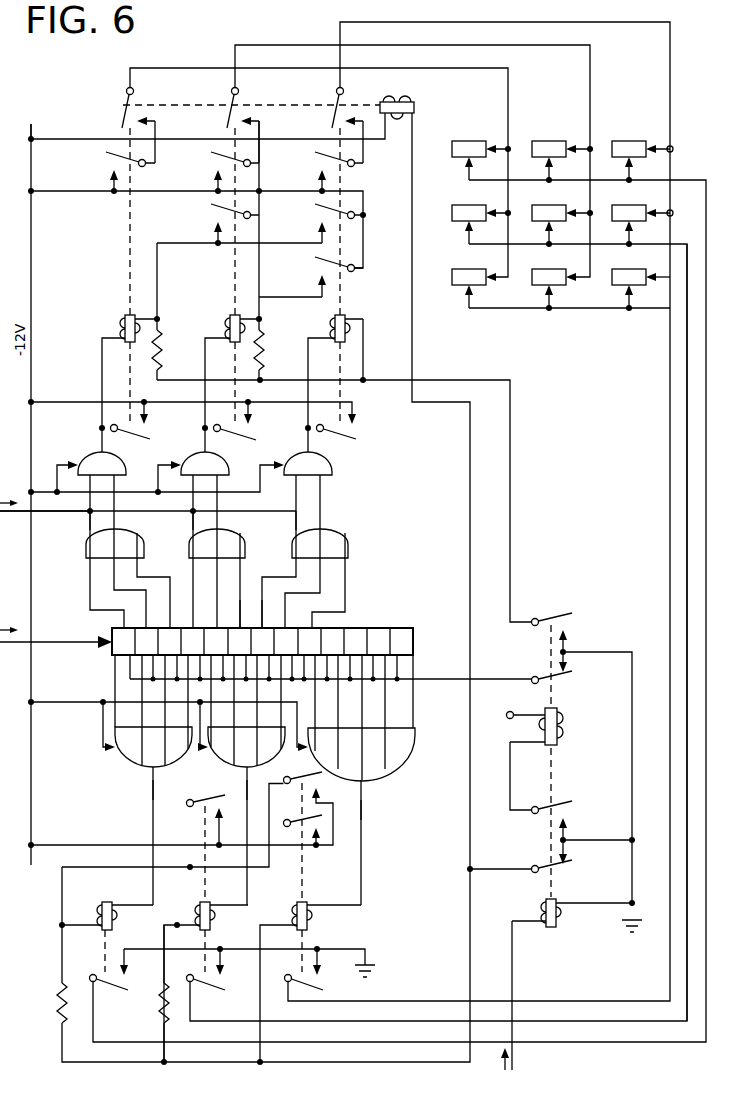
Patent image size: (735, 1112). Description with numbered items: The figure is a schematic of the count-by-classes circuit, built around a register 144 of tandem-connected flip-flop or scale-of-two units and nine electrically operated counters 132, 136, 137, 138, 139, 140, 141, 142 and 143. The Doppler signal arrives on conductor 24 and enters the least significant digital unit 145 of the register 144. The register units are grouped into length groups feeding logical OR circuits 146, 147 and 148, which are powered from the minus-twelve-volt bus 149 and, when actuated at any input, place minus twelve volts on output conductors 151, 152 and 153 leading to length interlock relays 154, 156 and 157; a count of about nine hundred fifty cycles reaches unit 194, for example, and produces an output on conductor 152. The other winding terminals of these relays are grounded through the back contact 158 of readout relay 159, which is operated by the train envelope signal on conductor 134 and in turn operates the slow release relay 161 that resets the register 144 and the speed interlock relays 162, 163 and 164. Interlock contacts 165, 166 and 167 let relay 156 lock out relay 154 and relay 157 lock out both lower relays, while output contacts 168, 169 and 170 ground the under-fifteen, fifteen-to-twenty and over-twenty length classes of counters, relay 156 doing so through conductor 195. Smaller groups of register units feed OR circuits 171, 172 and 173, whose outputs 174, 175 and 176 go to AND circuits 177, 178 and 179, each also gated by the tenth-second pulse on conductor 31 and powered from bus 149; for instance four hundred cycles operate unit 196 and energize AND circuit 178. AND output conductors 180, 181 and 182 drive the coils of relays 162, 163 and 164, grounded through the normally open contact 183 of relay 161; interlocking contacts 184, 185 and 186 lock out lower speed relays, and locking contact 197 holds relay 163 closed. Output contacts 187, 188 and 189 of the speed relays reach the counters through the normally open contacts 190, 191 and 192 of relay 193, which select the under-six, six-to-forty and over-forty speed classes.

The conductor 24 is at (22, 644).
The conductor 31 is at (19, 512).
The electrically operated counter 132 is at (562, 190).
The conductor 134 is at (512, 1063).
The electrically operated counter 136 is at (482, 126).
The electrically operated counter 137 is at (562, 126).
The electrically operated counter 138 is at (642, 126).
The electrically operated counter 139 is at (482, 190).
The electrically operated counter 140 is at (642, 190).
The electrically operated counter 141 is at (482, 254).
The electrically operated counter 142 is at (562, 254).
The electrically operated counter 143 is at (642, 254).
The register 144 is at (377, 628).
The least significant digital unit 145 is at (112, 638).
The logical OR circuit 146 is at (122, 765).
The logical OR circuit 147 is at (233, 765).
The logical OR circuit 148 is at (405, 758).
The -12-volt bus 149 is at (31, 228).
The output conductor 151 is at (152, 790).
The output conductor 152 is at (247, 783).
The output conductor 153 is at (361, 807).
The length interlock relay 154 is at (112, 920).
The length interlock relay 156 is at (210, 920).
The length interlock relay 157 is at (307, 920).
The back contact 158 is at (564, 874).
The readout relay 159 is at (558, 926).
The slow release relay 161 is at (555, 748).
The speed interlock relay 162 is at (124, 319).
The speed interlock relay 163 is at (229, 319).
The speed interlock relay 164 is at (332, 319).
The interlock contact 165 is at (191, 800).
The interlock contact 166 is at (290, 812).
The interlock contact 167 is at (305, 766).
The output contact 168 is at (122, 992).
The output contact 169 is at (220, 987).
The output contact 170 is at (322, 989).
The OR circuit 171 is at (141, 546).
The OR circuit 172 is at (244, 546).
The OR circuit 173 is at (348, 546).
The OR circuit output 174 is at (113, 525).
The OR circuit output 175 is at (214, 525).
The OR circuit output 176 is at (315, 525).
The AND circuit 177 is at (117, 458).
The AND circuit 178 is at (220, 458).
The AND circuit 179 is at (334, 462).
The AND circuit output conductor 180 is at (99, 430).
The AND circuit output conductor 181 is at (204, 430).
The AND circuit output conductor 182 is at (313, 445).
The normally open contact 183 is at (568, 632).
The interlocking contact 184 is at (212, 205).
The interlocking contact 185 is at (316, 205).
The interlocking contact 186 is at (316, 258).
The output contact 187 is at (106, 153).
The output contact 188 is at (212, 153).
The output contact 189 is at (316, 153).
The normally open contact 190 is at (121, 124).
The normally open contact 191 is at (226, 124).
The normally open contact 192 is at (331, 124).
The relay 193 is at (416, 107).
The register unit 194 is at (266, 626).
The conductor 195 is at (685, 300).
The register unit 196 is at (242, 625).
The locking contact 197 is at (256, 440).